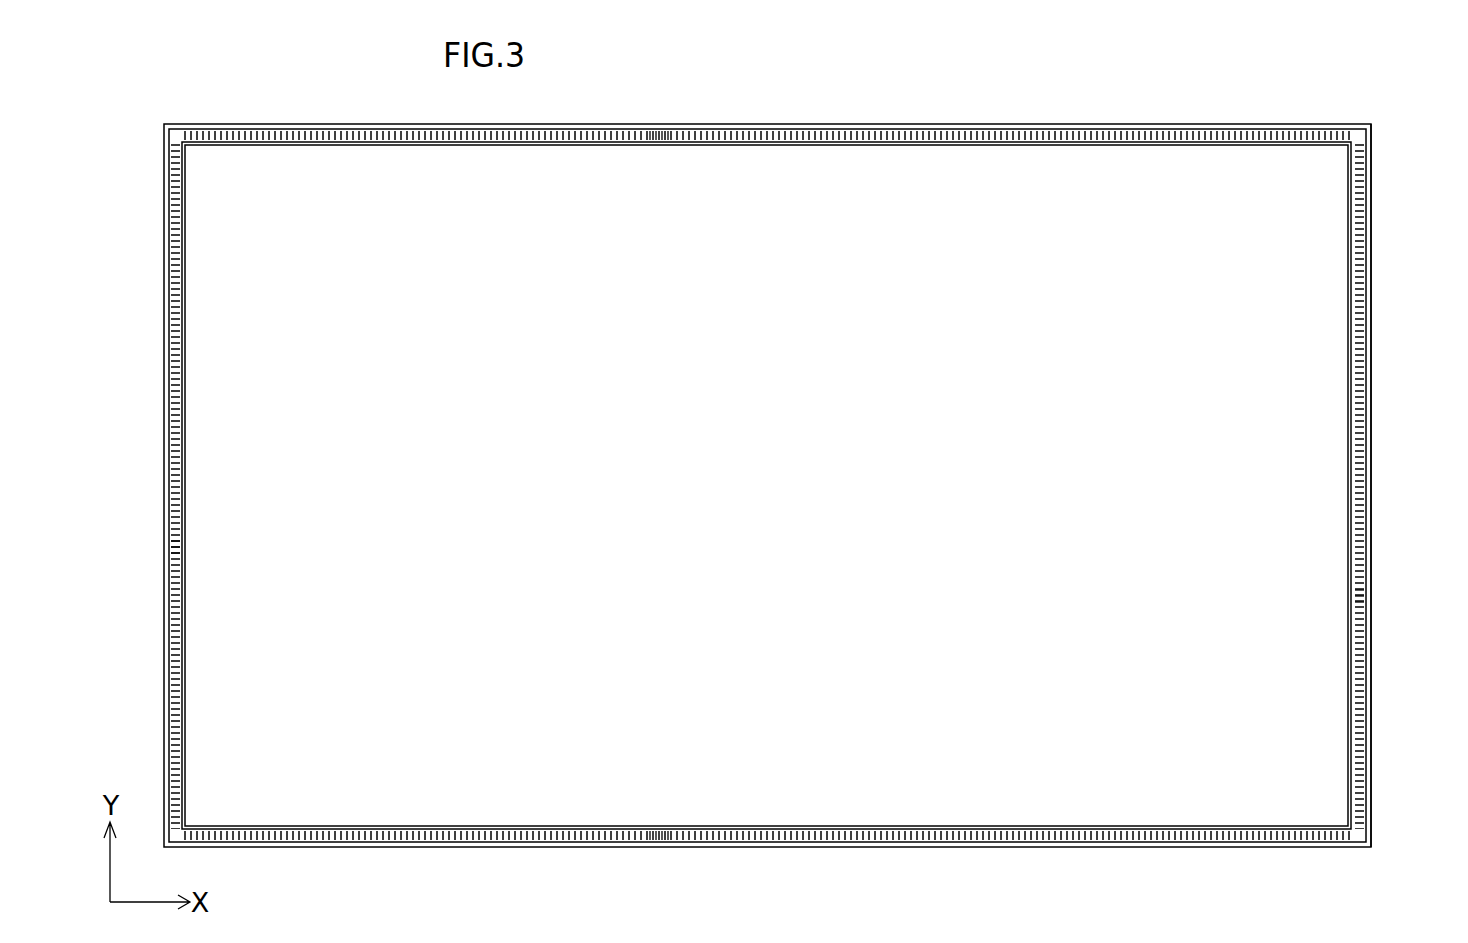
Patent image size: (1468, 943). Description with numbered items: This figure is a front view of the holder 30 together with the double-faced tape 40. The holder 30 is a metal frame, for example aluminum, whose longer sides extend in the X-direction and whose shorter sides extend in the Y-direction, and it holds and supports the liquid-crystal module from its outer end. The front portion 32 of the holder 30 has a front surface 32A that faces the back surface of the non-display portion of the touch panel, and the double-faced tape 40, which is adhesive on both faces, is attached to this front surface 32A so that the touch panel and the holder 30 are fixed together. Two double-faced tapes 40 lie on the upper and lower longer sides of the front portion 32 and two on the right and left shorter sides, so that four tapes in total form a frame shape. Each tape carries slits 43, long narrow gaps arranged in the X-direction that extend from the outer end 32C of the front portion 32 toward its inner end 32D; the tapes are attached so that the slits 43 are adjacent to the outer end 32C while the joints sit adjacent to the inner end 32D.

The holder 30 is at (1372, 124).
The front portion 32 is at (1368, 222).
The front surface of the front portion 32A is at (1368, 283).
The outer end of the front portion 32C is at (955, 129).
The inner end of the front portion 32D is at (955, 147).
The double-faced tape 40 is at (809, 136).
The slits 43 is at (653, 139).